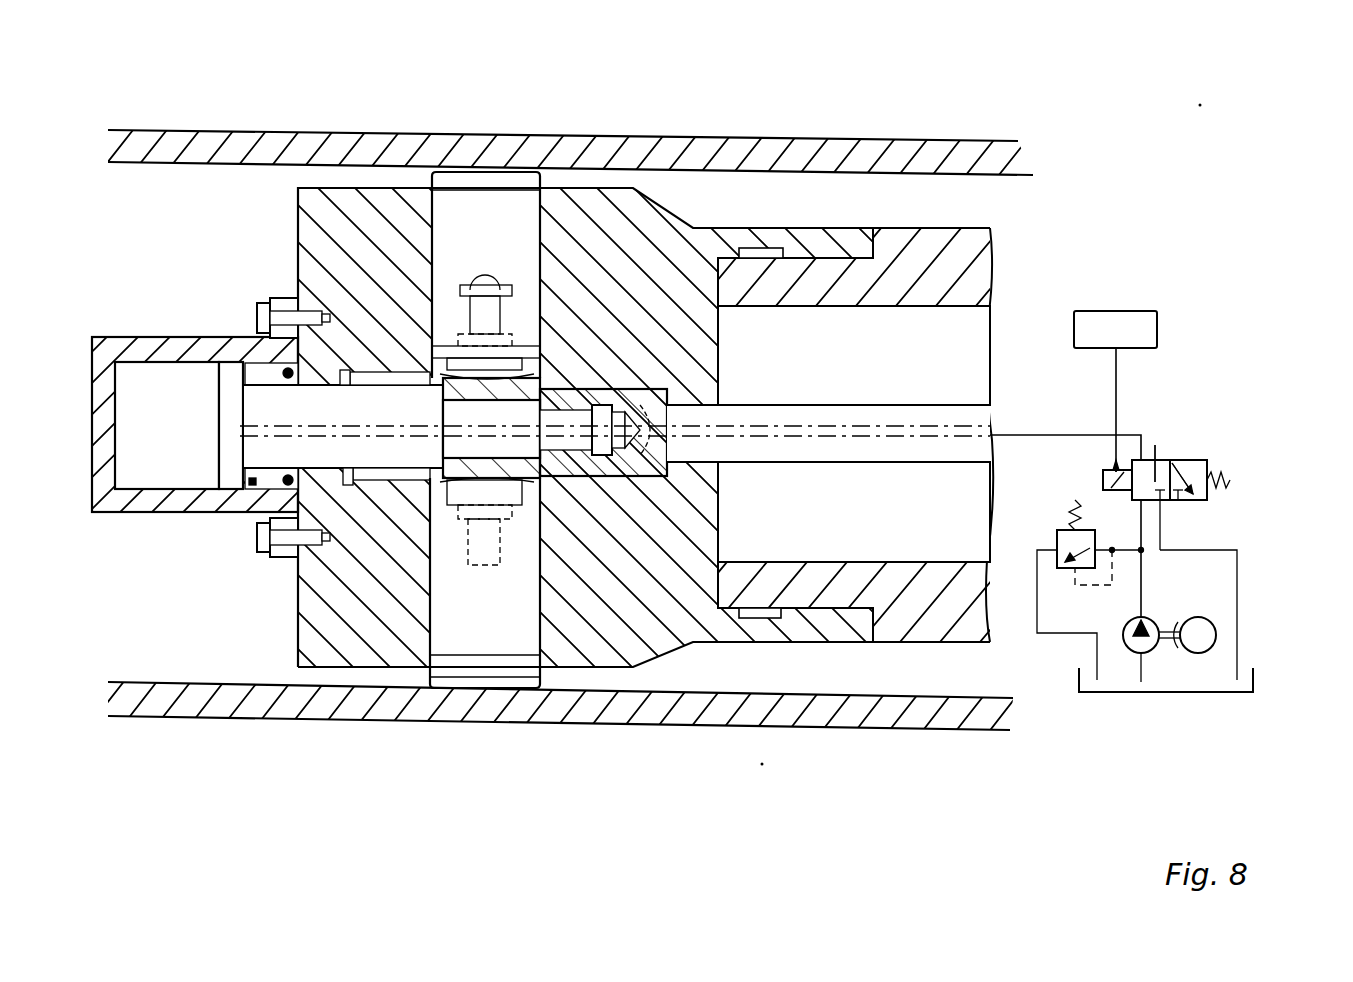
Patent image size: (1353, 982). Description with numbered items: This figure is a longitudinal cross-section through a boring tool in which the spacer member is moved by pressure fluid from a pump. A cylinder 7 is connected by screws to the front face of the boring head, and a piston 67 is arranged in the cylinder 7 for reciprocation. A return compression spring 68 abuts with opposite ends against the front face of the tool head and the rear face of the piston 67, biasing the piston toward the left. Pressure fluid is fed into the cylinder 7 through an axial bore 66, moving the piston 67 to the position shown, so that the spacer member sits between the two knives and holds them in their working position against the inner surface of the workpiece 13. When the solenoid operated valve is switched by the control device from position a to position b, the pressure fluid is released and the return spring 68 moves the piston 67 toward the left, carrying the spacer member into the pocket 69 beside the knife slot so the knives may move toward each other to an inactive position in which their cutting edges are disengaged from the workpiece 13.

The workpiece 13 is at (917, 160).
The cylinder 7 is at (162, 447).
The piston 67 is at (230, 450).
The return compression spring 68 is at (283, 480).
The pocket 69 is at (397, 475).
The axial bore 66 is at (877, 433).
The valve position a is at (1155, 449).
The valve position b is at (1195, 472).